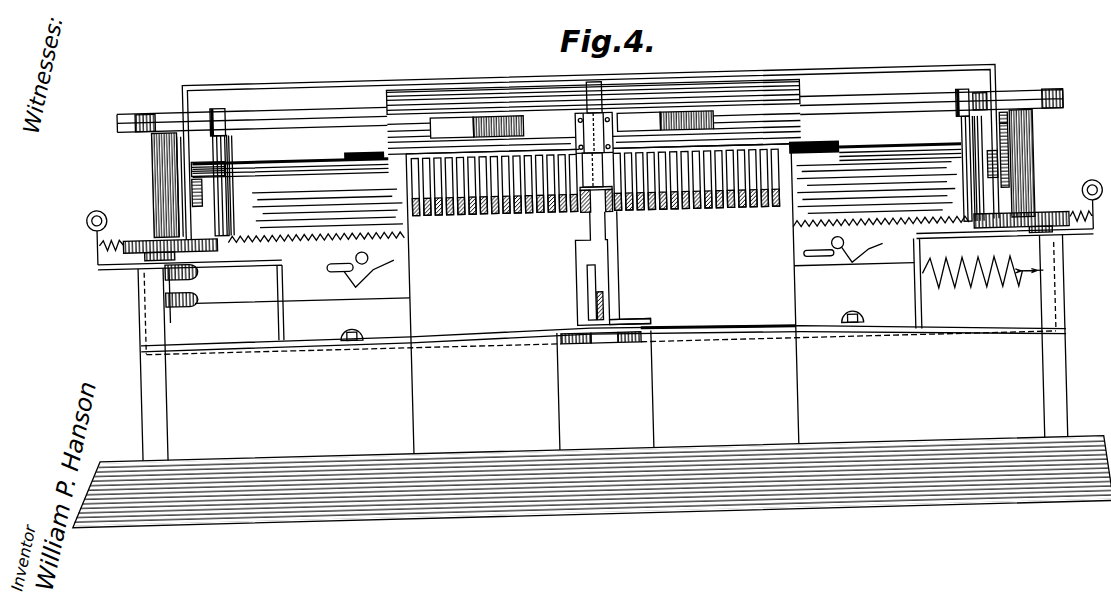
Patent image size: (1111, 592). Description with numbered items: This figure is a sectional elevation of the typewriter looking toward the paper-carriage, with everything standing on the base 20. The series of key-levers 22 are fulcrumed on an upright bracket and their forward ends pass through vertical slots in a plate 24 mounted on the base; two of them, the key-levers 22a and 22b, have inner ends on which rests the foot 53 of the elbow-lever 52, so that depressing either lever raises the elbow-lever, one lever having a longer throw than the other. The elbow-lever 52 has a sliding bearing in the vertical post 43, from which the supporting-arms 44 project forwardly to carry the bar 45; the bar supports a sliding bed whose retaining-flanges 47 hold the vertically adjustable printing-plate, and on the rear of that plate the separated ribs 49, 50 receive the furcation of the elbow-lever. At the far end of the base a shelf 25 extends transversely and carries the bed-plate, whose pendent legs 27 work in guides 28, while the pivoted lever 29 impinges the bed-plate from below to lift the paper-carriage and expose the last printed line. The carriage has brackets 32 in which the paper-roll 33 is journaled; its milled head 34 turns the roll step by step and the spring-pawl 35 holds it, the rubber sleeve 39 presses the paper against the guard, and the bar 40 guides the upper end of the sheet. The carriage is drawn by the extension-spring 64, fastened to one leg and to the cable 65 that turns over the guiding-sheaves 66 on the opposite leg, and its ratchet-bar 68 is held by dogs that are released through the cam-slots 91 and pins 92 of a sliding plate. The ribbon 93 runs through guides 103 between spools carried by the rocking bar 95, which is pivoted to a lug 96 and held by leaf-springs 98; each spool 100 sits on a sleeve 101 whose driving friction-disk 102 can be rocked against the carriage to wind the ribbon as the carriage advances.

The base 20 is at (591, 481).
The key-levers 22 is at (486, 212).
The key-lever 22a is at (584, 212).
The key-lever 22b is at (616, 212).
The plate 24 is at (629, 268).
The shelf 25 is at (330, 343).
The pendent legs 27 is at (164, 271).
The guides 28 is at (148, 296).
The pivoted lever 29 is at (597, 300).
The brackets 32 is at (188, 96).
The paper-roll 33 is at (290, 156).
The milled head 34 is at (1014, 160).
The spring-pawl 35 is at (1014, 128).
The rubber sleeve 39 is at (352, 149).
The bar 40 is at (605, 86).
The vertical post 43 is at (586, 164).
The supporting-arms 44 is at (594, 132).
The bar 45 is at (609, 81).
The retaining-flanges 47 is at (612, 322).
The rib 49 is at (452, 94).
The rib 50 is at (490, 100).
The elbow-lever 52 is at (594, 97).
The foot 53 is at (596, 186).
The extension-spring 64 is at (970, 280).
The cable 65 is at (259, 295).
The guiding-sheaves 66 is at (194, 276).
The ratchet-bar 68 is at (264, 231).
The cam-slots 91 is at (345, 268).
The pins 92 is at (366, 259).
The ribbon 93 is at (324, 117).
The rocking bar 95 is at (300, 333).
The lug 96 is at (594, 347).
The leaf-springs 98 is at (361, 326).
The spool 100 is at (150, 104).
The sleeve 101 is at (157, 175).
The driving friction-disk 102 is at (146, 229).
The guides 103 is at (232, 108).